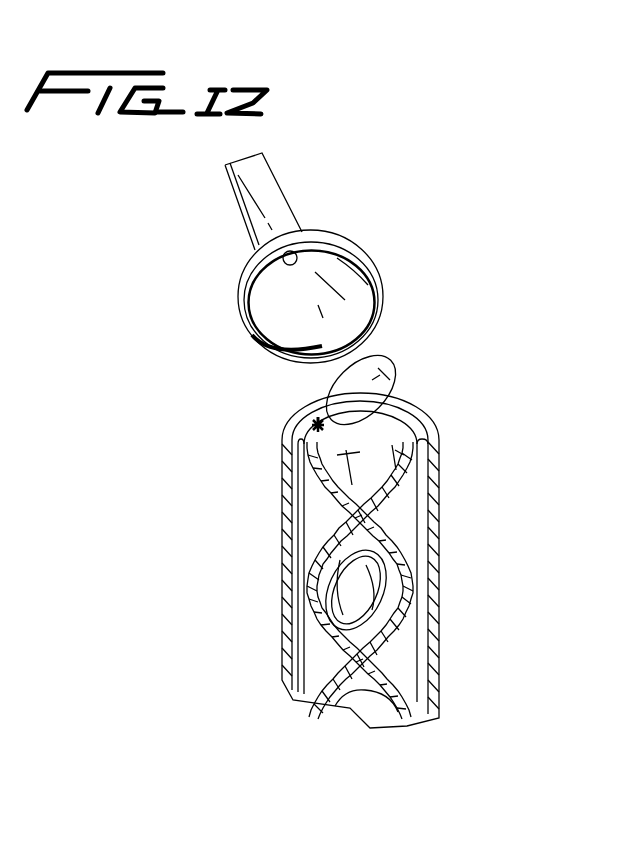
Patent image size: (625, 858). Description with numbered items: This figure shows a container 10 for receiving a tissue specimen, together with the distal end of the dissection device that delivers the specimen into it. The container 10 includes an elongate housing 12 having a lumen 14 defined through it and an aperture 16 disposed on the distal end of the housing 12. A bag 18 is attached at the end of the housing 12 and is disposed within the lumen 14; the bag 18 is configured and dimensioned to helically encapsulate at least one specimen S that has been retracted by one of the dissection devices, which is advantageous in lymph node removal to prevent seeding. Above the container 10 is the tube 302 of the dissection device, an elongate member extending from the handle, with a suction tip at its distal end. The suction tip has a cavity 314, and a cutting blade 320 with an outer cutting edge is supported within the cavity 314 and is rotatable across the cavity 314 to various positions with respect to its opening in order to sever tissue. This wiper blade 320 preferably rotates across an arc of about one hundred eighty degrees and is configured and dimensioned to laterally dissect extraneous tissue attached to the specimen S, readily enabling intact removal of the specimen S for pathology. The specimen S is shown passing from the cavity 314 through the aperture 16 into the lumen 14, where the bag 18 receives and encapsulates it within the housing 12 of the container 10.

The container 10 is at (242, 491).
The elongate housing 12 is at (439, 462).
The lumen 14 is at (430, 408).
The aperture 16 is at (309, 420).
The bag 18 is at (403, 550).
The specimen S is at (393, 383).
The tube 302 is at (270, 196).
The cavity 314 is at (343, 290).
The cutting blade 320 is at (250, 342).